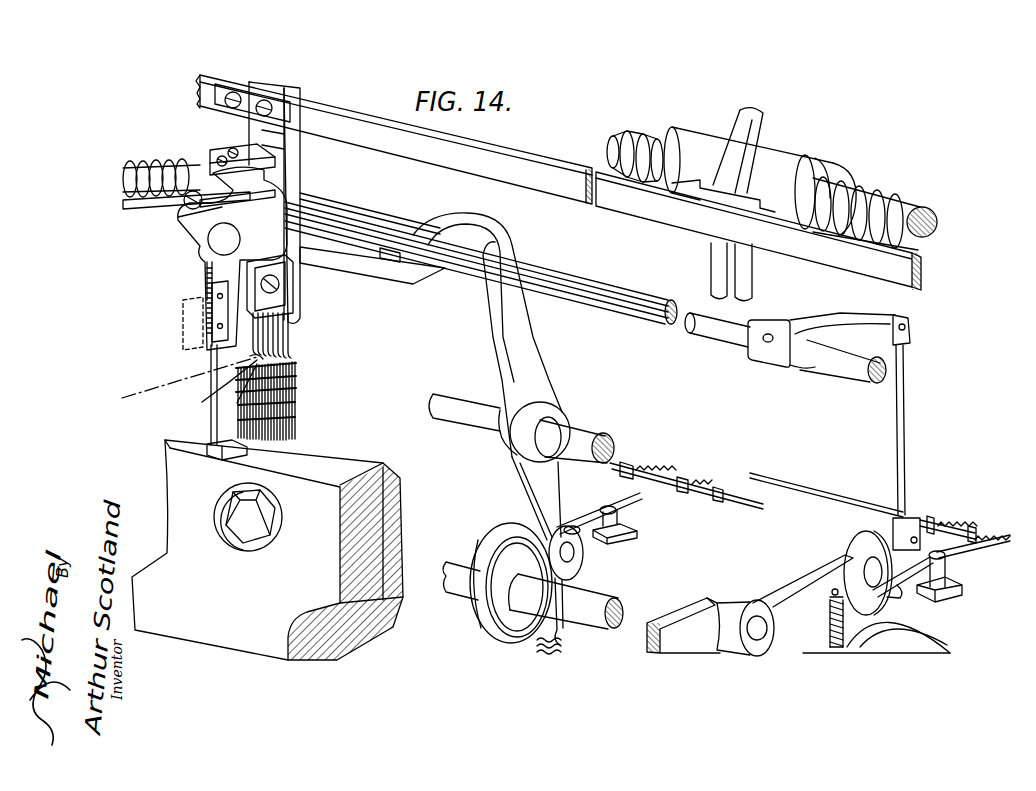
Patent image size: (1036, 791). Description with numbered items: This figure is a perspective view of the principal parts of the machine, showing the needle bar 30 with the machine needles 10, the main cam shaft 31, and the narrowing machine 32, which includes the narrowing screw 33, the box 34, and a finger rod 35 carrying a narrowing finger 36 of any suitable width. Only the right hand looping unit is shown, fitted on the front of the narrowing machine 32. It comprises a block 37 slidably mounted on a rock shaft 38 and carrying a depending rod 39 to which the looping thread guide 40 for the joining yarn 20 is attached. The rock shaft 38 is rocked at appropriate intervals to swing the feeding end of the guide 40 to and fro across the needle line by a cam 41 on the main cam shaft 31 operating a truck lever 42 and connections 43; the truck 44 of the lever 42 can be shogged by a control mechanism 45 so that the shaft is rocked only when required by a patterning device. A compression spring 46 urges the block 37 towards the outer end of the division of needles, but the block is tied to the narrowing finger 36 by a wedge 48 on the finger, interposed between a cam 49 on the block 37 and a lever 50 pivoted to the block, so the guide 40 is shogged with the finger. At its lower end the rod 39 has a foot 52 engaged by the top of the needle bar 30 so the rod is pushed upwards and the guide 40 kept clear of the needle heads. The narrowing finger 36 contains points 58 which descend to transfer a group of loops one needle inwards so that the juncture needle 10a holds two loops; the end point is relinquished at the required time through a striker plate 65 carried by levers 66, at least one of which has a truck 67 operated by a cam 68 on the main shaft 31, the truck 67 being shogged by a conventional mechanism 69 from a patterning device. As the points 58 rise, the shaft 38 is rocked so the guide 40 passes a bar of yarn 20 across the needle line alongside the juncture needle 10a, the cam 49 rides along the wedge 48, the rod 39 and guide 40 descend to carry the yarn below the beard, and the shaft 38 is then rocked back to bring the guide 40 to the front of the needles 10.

The machine needles 10 is at (236, 404).
The juncture needle 10a is at (263, 389).
The joining yarn 20 is at (184, 377).
The needle bar 30 is at (355, 535).
The main cam shaft 31 is at (626, 609).
The narrowing machine 32 is at (541, 140).
The narrowing screw 33 is at (876, 197).
The box 34 is at (786, 165).
The finger rod 35 is at (882, 268).
The narrowing finger 36 is at (292, 124).
The block 37 is at (216, 256).
The rock shaft 38 is at (670, 314).
The depending rod 39 is at (210, 418).
The looping thread guide 40 is at (226, 394).
The cam 41 is at (920, 638).
The truck lever 42 is at (815, 576).
The connections 43 is at (903, 417).
The truck 44 is at (863, 542).
The control mechanism 45 is at (932, 519).
The compression spring 46 is at (140, 168).
The wedge 48 is at (277, 171).
The cam 49 is at (217, 177).
The lever 50 is at (212, 226).
The foot 52 is at (210, 456).
The points 58 is at (295, 343).
The striker plate 65 is at (401, 282).
The levers 66 is at (525, 348).
The truck 67 is at (583, 563).
The cam 68 is at (512, 632).
The mechanism 69 is at (660, 480).